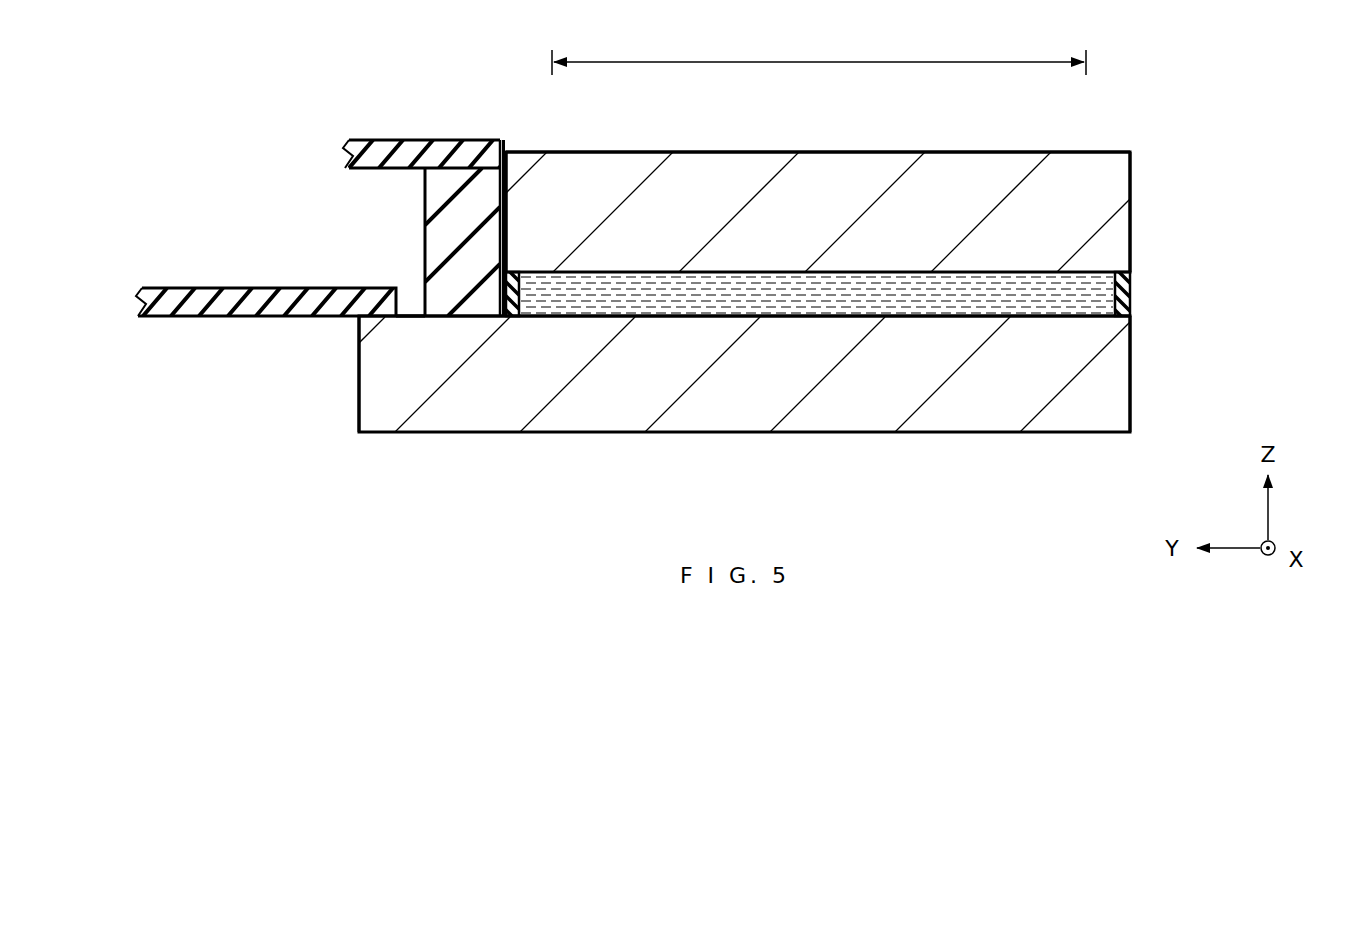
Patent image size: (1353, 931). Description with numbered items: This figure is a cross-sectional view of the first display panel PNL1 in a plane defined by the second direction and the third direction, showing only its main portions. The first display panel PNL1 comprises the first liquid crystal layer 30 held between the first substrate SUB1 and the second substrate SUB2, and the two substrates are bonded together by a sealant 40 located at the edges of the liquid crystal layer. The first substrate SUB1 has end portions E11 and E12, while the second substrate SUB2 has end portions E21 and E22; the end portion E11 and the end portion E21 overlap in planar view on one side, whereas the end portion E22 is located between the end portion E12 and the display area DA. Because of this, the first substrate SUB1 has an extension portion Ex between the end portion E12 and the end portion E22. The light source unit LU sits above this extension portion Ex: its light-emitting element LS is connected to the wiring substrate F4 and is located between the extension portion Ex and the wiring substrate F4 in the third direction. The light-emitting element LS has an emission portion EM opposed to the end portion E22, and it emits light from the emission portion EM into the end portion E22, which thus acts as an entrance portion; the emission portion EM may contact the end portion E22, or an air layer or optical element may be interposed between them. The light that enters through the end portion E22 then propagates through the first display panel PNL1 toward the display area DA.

The wiring substrate F4 is at (392, 143).
The light source unit LU is at (422, 187).
The light-emitting element LS is at (434, 196).
The end portion E22 is at (500, 198).
The emission portion EM is at (510, 226).
The extension portion Ex is at (409, 311).
The end portion E12 is at (358, 400).
The end portion E11 is at (1132, 401).
The first substrate SUB1 is at (1134, 363).
The second substrate SUB2 is at (1134, 205).
The end portion E21 is at (1134, 171).
The first display panel PNL1 is at (1132, 151).
The display area DA is at (819, 55).
The first liquid crystal layer 30 is at (1107, 288).
The sealant 40 is at (1120, 306).